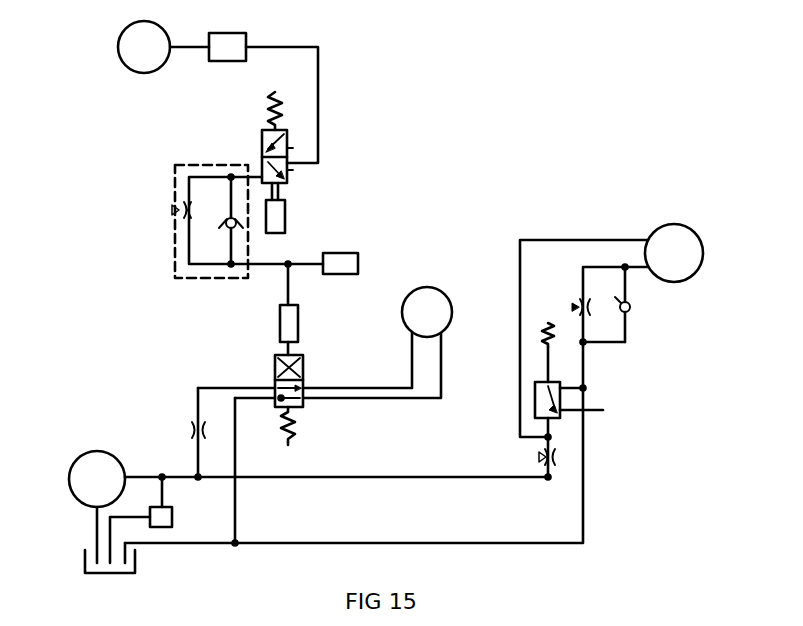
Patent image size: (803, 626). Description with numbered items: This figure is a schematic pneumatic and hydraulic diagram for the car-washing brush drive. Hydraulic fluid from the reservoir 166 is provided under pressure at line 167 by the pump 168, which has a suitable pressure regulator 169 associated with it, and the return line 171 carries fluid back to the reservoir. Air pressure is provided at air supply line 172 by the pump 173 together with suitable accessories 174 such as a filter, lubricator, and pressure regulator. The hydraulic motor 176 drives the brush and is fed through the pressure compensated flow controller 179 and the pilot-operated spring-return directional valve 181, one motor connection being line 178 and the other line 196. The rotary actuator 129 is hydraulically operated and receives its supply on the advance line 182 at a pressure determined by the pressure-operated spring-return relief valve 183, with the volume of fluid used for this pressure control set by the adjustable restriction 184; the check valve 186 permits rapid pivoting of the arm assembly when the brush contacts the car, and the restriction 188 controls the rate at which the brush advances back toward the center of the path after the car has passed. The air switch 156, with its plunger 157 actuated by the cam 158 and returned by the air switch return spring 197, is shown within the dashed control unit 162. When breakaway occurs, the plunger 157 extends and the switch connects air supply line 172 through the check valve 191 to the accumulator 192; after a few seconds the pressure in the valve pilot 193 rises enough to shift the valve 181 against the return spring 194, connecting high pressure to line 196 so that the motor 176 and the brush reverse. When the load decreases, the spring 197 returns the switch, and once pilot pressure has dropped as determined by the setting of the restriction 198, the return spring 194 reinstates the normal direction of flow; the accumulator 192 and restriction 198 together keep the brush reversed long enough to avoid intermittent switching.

The rotary actuator 129 is at (668, 225).
The valve 156 is at (262, 135).
The air switch plunger 157 is at (285, 189).
The cam 158 is at (285, 208).
The control unit 162 is at (238, 166).
The reservoir 166 is at (131, 574).
The line 167 is at (330, 478).
The pump 168 is at (70, 468).
The pressure regulator 169 is at (174, 516).
The return line 171 is at (270, 543).
The air supply line 172 is at (265, 46).
The pump 173 is at (118, 47).
The accessories 174 is at (226, 33).
The hydraulic motor 176 is at (452, 312).
The line 178 is at (412, 352).
The pressure compensated flow controller 179 is at (190, 430).
The pilot-operated spring-return directional valve 181 is at (304, 357).
The advance line 182 is at (519, 407).
The pressure-operated spring-return relief valve 183 is at (594, 408).
The adjustable restriction 184 is at (539, 457).
The check valve 186 is at (629, 311).
The restriction 188 is at (574, 306).
The check valve 191 is at (236, 228).
The accumulator 192 is at (335, 253).
The valve pilot 193 is at (299, 320).
The return spring 194 is at (297, 424).
The line 196 is at (443, 364).
The air switch return spring 197 is at (267, 114).
The restriction 198 is at (172, 210).